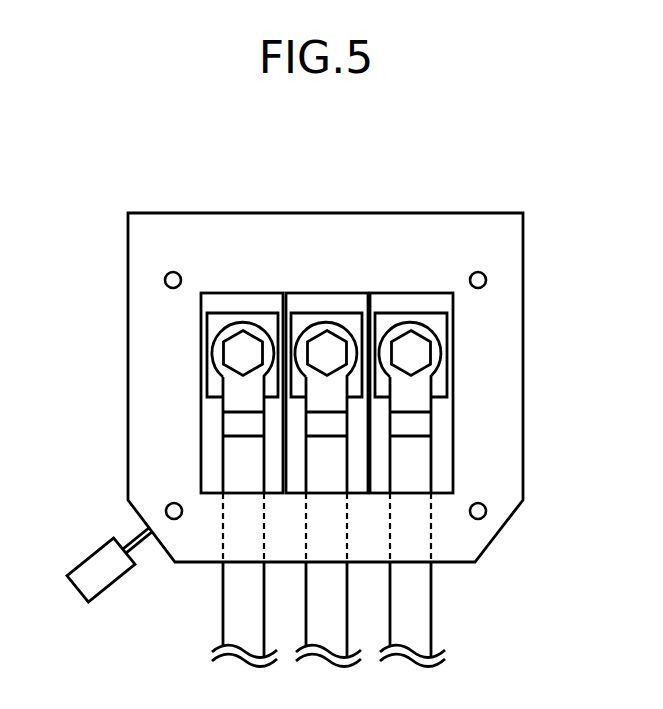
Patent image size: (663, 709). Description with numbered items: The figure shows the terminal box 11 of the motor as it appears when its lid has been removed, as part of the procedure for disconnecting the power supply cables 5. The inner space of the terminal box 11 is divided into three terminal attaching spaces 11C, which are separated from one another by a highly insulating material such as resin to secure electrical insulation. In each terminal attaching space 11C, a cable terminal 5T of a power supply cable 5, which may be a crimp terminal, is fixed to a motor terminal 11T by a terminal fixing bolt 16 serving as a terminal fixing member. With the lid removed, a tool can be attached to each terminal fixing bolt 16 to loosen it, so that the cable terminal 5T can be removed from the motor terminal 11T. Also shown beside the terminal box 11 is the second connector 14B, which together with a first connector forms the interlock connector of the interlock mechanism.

The terminal box 11 is at (518, 308).
The terminal attaching space 11C is at (234, 307).
The motor terminal 11T is at (218, 323).
The cable terminal 5T is at (252, 333).
The terminal fixing bolt 16 is at (235, 356).
The power supply cable 5 is at (243, 596).
The second connector 14B is at (92, 565).